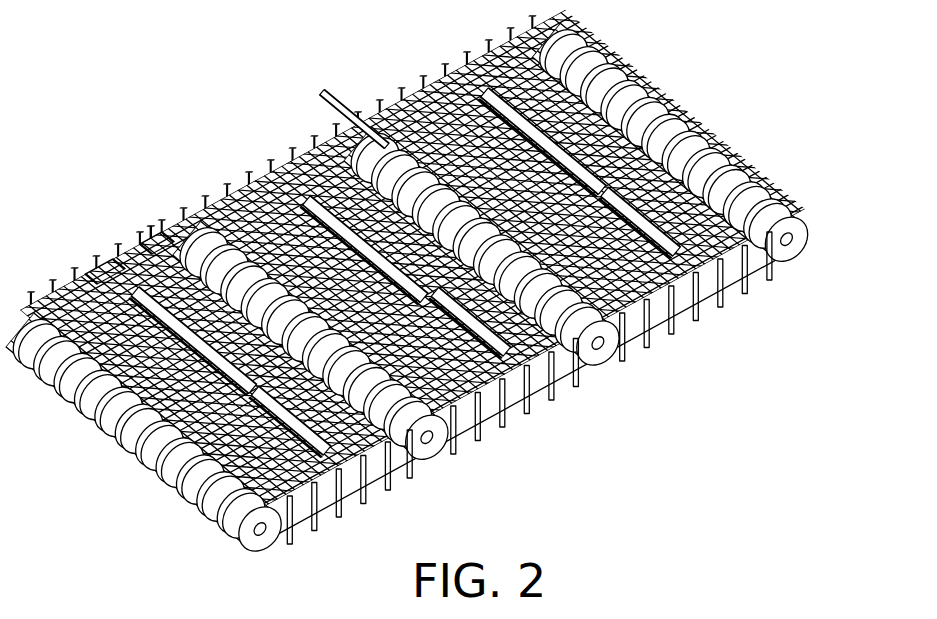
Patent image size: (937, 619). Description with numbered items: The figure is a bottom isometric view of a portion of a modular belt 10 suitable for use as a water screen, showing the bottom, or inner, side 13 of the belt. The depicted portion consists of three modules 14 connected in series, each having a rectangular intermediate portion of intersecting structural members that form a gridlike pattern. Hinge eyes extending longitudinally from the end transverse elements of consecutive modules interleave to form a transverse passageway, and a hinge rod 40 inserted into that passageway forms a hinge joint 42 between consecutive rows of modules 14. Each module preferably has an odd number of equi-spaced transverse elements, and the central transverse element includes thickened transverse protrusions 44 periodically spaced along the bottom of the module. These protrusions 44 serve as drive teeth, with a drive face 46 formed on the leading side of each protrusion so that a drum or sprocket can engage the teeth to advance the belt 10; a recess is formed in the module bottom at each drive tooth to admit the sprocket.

The modular belt 10 is at (226, 98).
The bottom side 13 is at (157, 247).
The module 14 is at (548, 33).
The hinge rod 40 is at (360, 100).
The hinge joint 42 is at (623, 343).
The transverse protrusion 44 is at (462, 95).
The drive face 46 is at (98, 272).